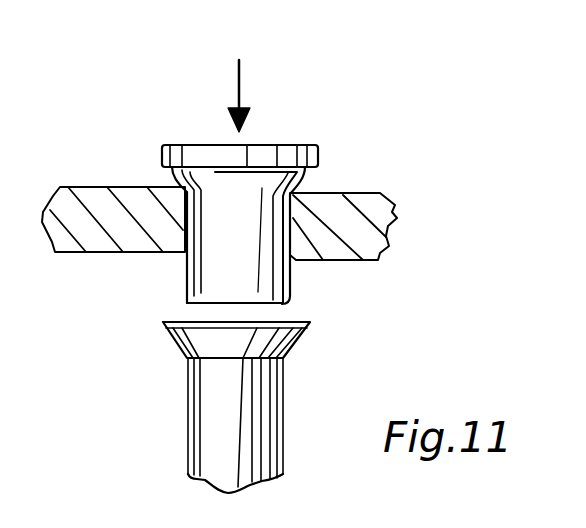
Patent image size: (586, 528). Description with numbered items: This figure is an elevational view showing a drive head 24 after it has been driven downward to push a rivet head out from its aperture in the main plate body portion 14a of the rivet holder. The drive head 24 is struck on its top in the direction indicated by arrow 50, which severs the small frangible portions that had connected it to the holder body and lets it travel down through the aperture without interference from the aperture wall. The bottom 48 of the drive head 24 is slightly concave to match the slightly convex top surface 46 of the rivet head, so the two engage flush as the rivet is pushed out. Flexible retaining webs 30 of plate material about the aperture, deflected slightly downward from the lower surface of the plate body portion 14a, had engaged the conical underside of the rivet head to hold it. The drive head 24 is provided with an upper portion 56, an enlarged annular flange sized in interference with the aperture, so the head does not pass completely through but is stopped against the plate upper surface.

The main plate body portion 14a is at (380, 224).
The drive head 24 is at (345, 172).
The web 30 is at (292, 266).
The top surface of the rivet head 46 is at (188, 322).
The bottom of the drive head 48 is at (272, 308).
The arrow 50 is at (238, 62).
The upper portion 56 is at (142, 143).